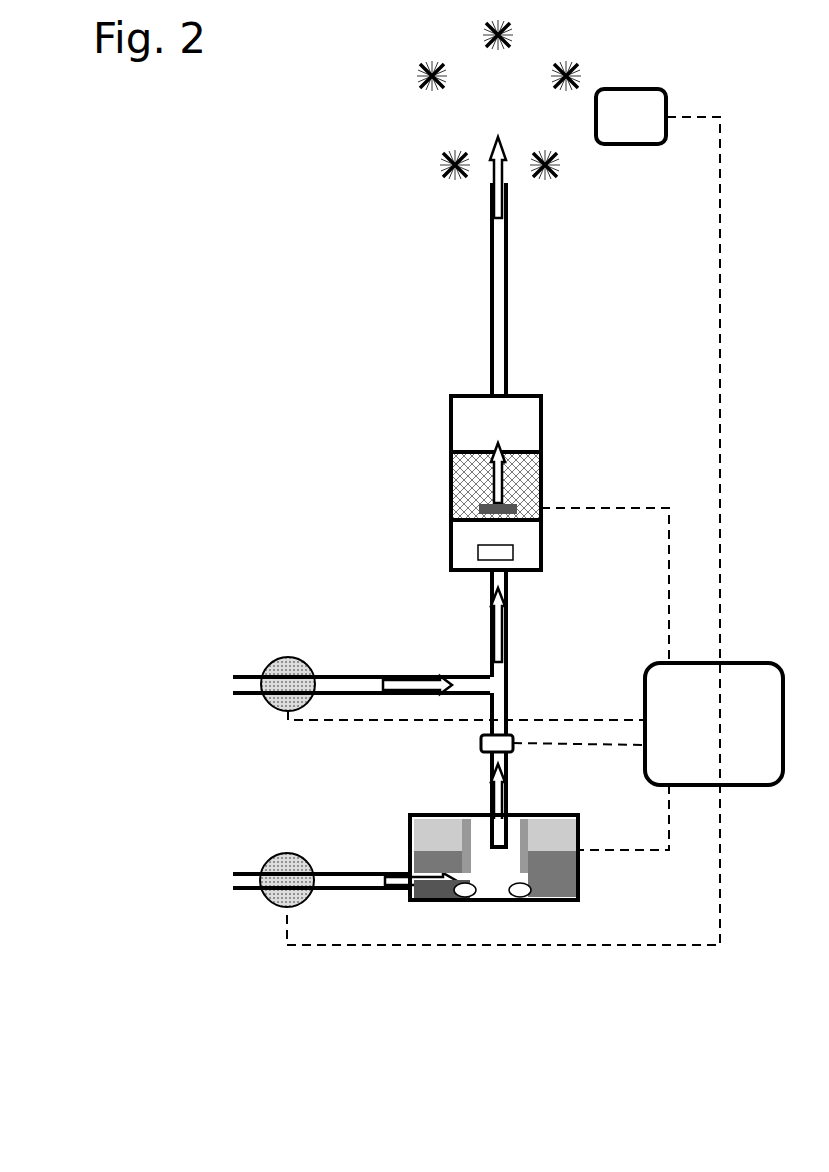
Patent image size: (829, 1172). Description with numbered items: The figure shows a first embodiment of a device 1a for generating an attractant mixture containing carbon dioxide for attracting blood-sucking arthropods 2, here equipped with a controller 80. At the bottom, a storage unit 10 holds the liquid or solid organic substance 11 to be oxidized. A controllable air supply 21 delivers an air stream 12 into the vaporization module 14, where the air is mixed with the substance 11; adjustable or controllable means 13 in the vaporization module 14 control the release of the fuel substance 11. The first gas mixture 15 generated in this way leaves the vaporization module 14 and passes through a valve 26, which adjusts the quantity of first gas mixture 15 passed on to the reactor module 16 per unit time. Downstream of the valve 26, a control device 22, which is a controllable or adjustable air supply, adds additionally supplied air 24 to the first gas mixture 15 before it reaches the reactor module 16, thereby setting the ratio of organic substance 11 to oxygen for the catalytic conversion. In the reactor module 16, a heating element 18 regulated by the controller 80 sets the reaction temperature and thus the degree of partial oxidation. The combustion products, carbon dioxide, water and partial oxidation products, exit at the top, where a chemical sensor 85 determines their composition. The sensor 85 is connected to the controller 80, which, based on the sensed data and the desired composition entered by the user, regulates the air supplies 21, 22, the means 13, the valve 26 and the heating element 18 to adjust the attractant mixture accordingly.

The device 1a is at (222, 975).
The blood-sucking arthropods 2 is at (575, 72).
The storage unit 10 is at (543, 910).
The organic substance 11 is at (565, 900).
The air stream 12 is at (388, 892).
The adjustable or controllable means 13 is at (465, 898).
The vaporization module 14 is at (490, 870).
The first gas mixture 15 is at (508, 798).
The reactor module 16 is at (407, 484).
The heating element 18 is at (525, 518).
The controllable air supply 21 is at (272, 853).
The control device 22 is at (272, 657).
The additionally supplied air 24 is at (393, 675).
The valve 26 is at (480, 747).
The controller 80 is at (680, 756).
The chemical sensor 85 is at (503, 517).